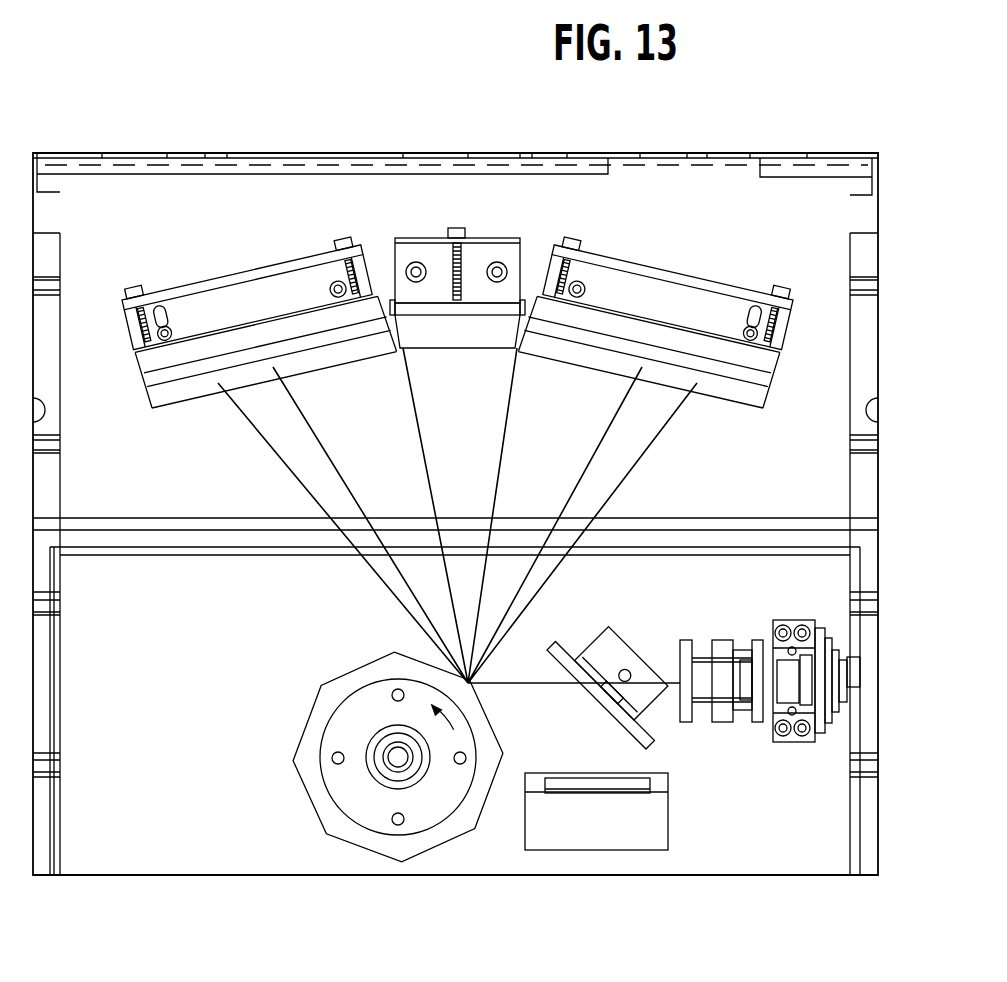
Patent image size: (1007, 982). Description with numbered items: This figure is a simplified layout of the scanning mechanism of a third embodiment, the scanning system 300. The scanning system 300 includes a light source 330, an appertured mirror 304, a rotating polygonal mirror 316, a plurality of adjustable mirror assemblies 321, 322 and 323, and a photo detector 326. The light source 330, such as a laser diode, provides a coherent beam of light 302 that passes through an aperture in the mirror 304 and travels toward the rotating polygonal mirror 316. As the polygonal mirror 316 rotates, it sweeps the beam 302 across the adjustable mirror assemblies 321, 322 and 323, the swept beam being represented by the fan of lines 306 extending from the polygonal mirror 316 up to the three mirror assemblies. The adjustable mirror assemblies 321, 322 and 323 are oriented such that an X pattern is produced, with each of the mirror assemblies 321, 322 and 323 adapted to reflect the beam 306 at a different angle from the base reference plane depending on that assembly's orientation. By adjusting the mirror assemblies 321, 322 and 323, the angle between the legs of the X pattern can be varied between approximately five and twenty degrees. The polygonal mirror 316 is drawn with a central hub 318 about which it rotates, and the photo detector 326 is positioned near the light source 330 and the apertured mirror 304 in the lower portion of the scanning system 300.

The scanning system 300 is at (888, 178).
The beam of light 302 is at (523, 683).
The appertured mirror 304 is at (597, 643).
The lines 306 is at (655, 440).
The rotating polygonal mirror 316 is at (317, 687).
The hub shaft 318 is at (382, 777).
The adjustable mirror assembly 321 is at (240, 270).
The adjustable mirror assembly 322 is at (487, 237).
The adjustable mirror assembly 323 is at (667, 272).
The photo detector 326 is at (670, 810).
The light source 330 is at (728, 632).